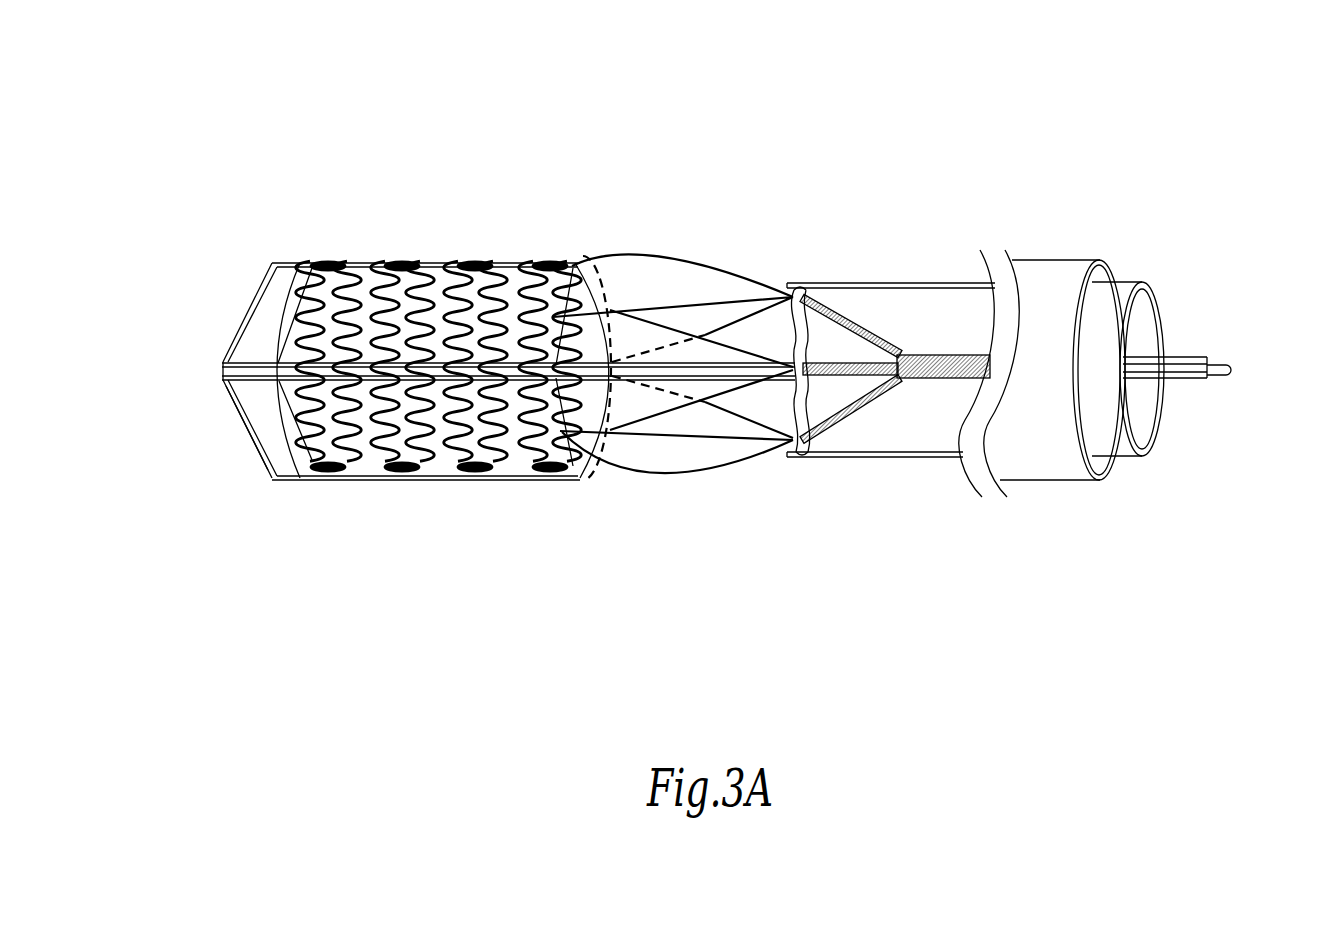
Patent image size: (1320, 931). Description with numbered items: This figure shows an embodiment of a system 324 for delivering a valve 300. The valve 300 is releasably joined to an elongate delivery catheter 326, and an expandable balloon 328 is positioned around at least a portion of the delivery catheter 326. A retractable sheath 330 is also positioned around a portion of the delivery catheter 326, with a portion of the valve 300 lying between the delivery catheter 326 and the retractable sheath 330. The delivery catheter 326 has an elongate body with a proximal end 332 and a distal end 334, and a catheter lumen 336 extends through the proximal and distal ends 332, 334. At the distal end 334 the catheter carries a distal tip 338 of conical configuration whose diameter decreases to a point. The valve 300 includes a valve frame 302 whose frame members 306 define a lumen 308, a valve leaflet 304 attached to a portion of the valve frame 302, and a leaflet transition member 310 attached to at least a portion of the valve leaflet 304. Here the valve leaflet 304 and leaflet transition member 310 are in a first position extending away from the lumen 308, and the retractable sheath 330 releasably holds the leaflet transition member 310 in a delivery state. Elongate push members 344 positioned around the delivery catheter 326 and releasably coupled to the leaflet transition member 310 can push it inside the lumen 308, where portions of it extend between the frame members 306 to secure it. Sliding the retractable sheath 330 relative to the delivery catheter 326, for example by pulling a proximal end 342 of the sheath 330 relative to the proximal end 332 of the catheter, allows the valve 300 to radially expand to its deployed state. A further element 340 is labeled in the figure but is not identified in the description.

The valve 300 is at (265, 298).
The valve frame 302 is at (573, 267).
The valve leaflet 304 is at (688, 268).
The frame members 306 is at (452, 295).
The lumen 308 is at (298, 335).
The leaflet transition member 310 is at (799, 293).
The system 324 is at (1168, 127).
The elongate delivery catheter 326 is at (258, 380).
The expandable balloon 328 is at (507, 268).
The retractable sheath 330 is at (890, 283).
The proximal end 332 is at (1129, 251).
The distal end 334 is at (158, 355).
The catheter lumen 336 is at (1243, 363).
The distal tip 338 is at (247, 436).
The sheath distal edge 340 is at (304, 262).
The proximal end of the sheath 342 is at (1052, 240).
The elongate push members 344 is at (873, 402).